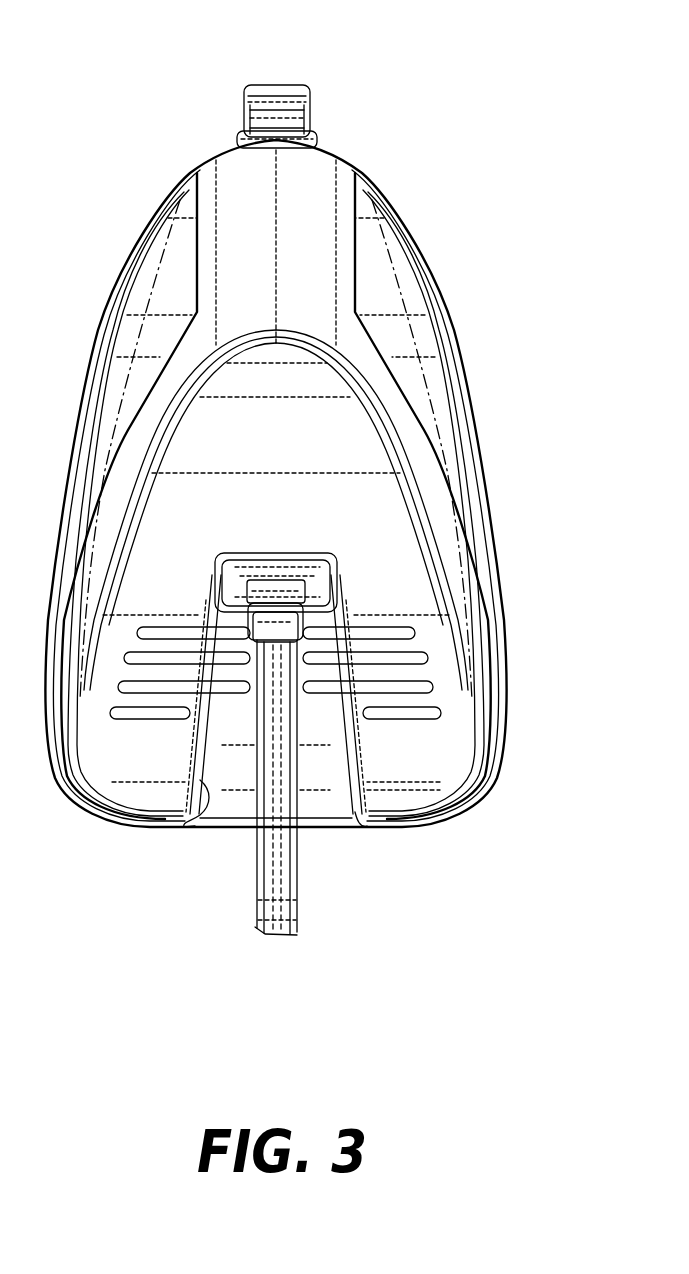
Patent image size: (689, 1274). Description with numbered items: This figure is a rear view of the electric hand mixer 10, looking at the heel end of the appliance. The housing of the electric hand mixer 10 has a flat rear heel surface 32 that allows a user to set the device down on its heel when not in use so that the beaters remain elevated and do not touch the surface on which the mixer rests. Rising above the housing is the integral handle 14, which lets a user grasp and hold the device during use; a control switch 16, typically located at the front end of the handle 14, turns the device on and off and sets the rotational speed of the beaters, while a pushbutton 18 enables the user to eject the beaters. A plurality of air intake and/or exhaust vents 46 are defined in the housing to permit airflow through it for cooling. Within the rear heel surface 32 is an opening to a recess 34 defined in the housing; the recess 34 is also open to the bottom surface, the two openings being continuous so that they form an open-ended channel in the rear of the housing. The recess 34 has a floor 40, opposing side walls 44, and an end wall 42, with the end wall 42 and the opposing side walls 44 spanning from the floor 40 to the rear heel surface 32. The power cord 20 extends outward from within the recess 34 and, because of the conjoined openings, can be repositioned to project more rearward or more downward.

The electric hand mixer 10 is at (570, 45).
The integral handle 14 is at (312, 210).
The control switch 16 is at (270, 92).
The pushbutton 18 is at (300, 137).
The power cord 20 is at (300, 885).
The rear heel surface 32 is at (423, 540).
The recess 34 is at (340, 617).
The floor 40 is at (236, 805).
The end wall 42 is at (302, 567).
The opposing side walls 44 is at (187, 822).
The air intake and/or exhaust vents 46 is at (432, 687).